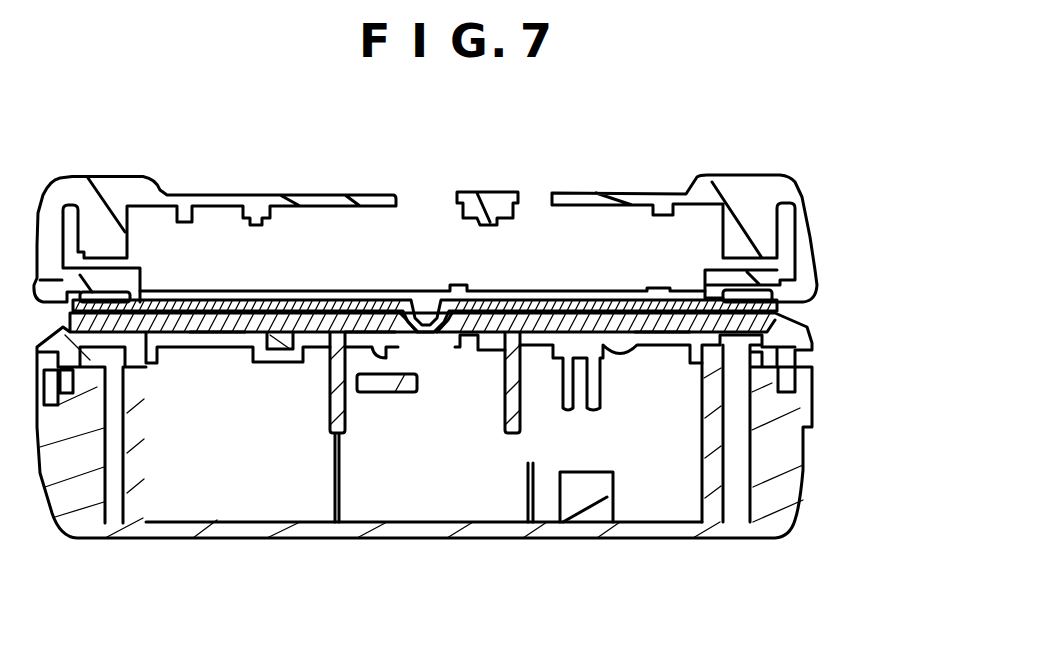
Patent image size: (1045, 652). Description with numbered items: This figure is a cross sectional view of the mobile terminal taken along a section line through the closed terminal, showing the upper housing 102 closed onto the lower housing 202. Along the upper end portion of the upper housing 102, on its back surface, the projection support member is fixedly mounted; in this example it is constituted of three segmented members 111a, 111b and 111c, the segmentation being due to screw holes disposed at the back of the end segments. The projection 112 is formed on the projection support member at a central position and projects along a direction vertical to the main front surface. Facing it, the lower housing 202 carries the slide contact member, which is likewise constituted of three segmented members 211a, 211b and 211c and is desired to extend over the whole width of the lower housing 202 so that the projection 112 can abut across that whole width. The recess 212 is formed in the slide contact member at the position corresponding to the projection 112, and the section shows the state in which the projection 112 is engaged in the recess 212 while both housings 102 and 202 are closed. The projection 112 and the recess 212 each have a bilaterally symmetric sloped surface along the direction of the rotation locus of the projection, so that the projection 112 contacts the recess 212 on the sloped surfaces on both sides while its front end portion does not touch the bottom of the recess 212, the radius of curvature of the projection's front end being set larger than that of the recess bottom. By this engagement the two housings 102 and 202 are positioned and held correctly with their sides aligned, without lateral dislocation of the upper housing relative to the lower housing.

The upper housing 102 is at (482, 210).
The lower housing 202 is at (483, 452).
The segmented member 111a is at (353, 293).
The segmented member 111b is at (138, 287).
The segmented member 111c is at (680, 289).
The projection 112 is at (430, 318).
The segmented member 211a is at (370, 334).
The segmented member 211b is at (217, 334).
The segmented member 211c is at (660, 334).
The recess 212 is at (442, 334).